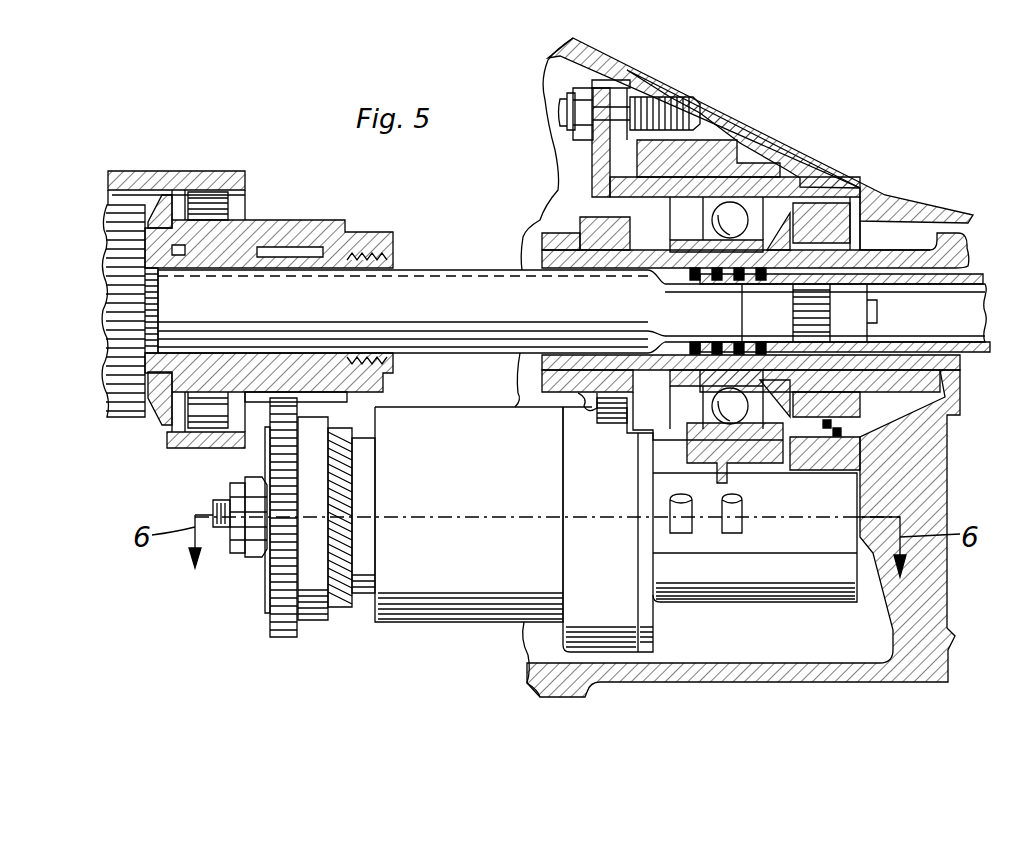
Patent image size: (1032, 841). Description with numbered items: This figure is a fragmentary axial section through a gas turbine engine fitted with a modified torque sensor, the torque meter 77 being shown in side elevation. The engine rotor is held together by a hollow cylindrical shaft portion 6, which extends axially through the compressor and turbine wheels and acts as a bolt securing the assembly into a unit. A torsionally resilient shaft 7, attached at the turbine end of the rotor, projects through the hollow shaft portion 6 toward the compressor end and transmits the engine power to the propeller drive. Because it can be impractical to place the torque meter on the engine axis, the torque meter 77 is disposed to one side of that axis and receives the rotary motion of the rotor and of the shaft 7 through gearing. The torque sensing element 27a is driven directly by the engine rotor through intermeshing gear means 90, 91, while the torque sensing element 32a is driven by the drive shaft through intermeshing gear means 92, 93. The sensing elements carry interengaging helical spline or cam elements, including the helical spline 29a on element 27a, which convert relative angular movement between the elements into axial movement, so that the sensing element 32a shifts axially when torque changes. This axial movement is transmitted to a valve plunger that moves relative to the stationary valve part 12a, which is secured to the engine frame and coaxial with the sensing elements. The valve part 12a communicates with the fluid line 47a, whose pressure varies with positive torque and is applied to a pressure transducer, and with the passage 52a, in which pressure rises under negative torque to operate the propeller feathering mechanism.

The hollow cylindrical shaft portion 6 is at (960, 242).
The torsionally resilient shaft 7 is at (975, 273).
The stationary valve part 12a is at (735, 600).
The torque sensing element 27a is at (366, 438).
The helical spline or cam element 29a is at (338, 610).
The torque sensing element 32a is at (307, 620).
The fluid line 47a is at (750, 580).
The passage 52a is at (672, 508).
The torque meter 77 is at (462, 405).
The intermeshing gear means 90 is at (615, 419).
The intermeshing gear means 91 is at (588, 401).
The intermeshing gear means 92 is at (268, 452).
The intermeshing gear means 93 is at (330, 402).